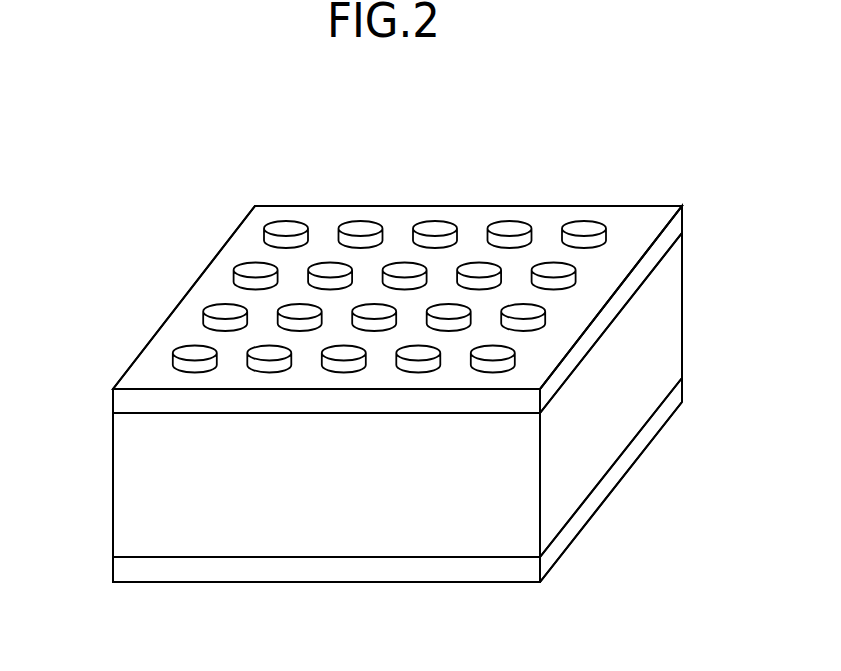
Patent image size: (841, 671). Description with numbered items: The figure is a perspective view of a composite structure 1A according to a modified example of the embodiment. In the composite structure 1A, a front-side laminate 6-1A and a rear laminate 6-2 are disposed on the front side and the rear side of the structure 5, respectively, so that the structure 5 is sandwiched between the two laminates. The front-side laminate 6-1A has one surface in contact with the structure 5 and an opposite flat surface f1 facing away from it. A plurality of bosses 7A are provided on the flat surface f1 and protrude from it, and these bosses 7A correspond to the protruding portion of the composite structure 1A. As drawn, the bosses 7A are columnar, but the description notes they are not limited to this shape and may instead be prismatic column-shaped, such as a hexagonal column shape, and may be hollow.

The composite structure 1A is at (489, 124).
The structure 5 is at (142, 478).
The front-side laminate 6-1A is at (327, 230).
The laminate 6-2 is at (325, 570).
The bosses 7A is at (437, 230).
The flat surface f1 is at (632, 230).